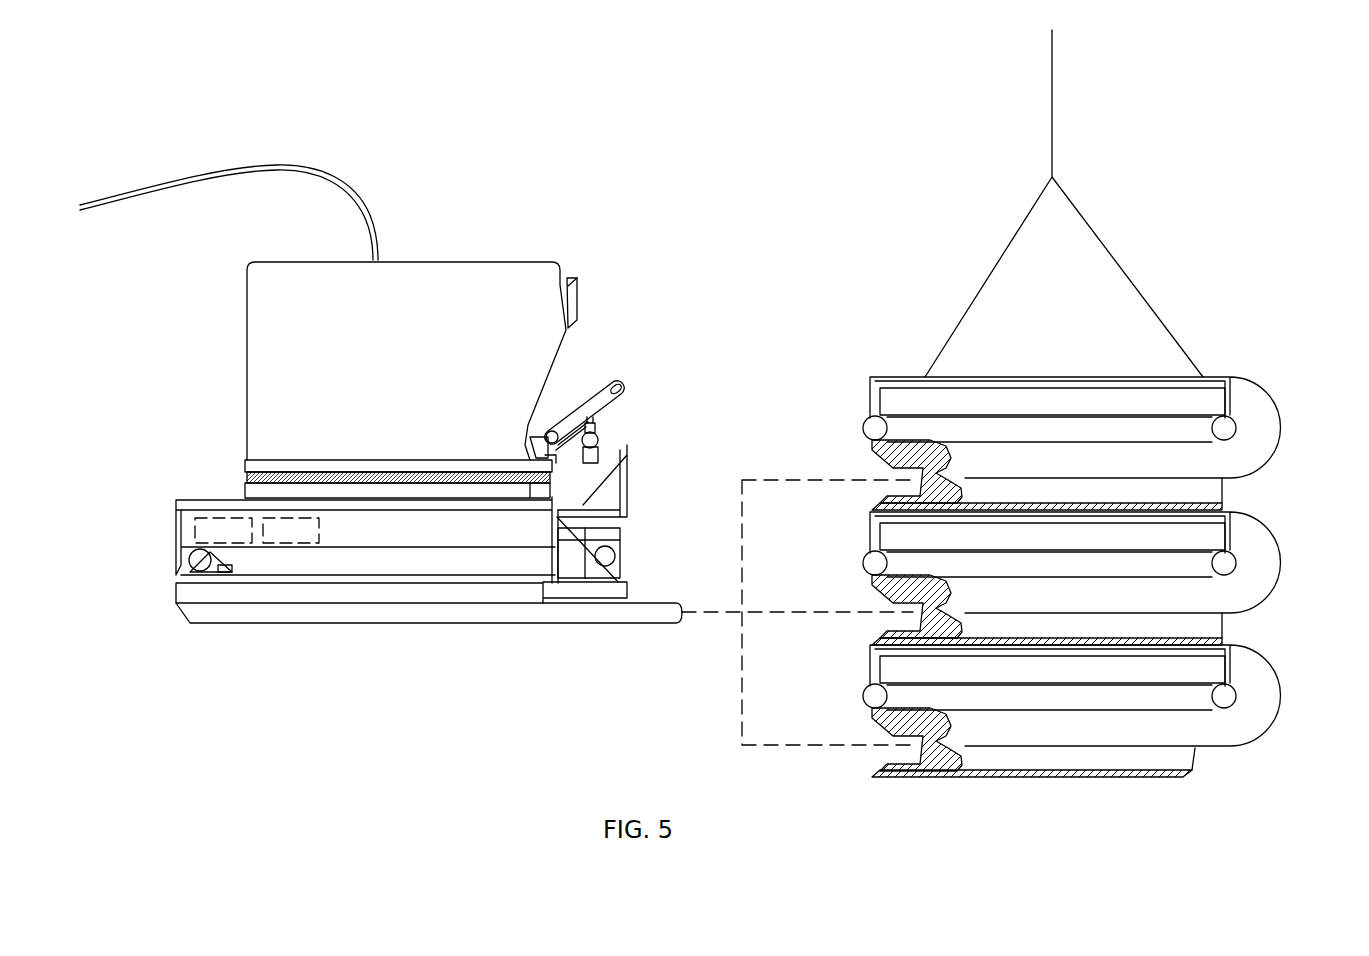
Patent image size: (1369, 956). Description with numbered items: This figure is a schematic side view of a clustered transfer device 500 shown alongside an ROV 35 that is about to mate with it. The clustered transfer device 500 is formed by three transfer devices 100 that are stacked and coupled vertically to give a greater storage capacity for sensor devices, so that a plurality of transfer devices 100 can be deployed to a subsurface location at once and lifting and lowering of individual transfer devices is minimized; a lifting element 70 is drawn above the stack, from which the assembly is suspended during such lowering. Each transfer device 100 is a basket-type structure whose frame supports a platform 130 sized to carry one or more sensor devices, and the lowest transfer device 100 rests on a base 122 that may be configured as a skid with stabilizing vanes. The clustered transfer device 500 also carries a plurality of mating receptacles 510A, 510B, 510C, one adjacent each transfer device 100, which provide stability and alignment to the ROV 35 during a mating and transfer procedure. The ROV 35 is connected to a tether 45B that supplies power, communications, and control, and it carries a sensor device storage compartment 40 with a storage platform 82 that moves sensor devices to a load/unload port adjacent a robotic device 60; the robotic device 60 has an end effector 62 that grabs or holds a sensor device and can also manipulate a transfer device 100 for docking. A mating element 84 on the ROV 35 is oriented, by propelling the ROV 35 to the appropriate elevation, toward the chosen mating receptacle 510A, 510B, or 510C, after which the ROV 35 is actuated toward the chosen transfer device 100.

The tether 45B is at (137, 186).
The ROV 35 is at (511, 258).
The robotic device 60 is at (606, 383).
The end effector 62 is at (600, 447).
The sensor device storage compartment 40 is at (156, 478).
The storage platform 82 is at (618, 530).
The mating receptacle 84 is at (693, 628).
The stand 70 is at (1052, 125).
The clustered transfer device 500 is at (1058, 526).
The transfer device 100 is at (1245, 375).
The platform 130 is at (1023, 432).
The mating receptacle 510A is at (913, 487).
The mating receptacle 510B is at (913, 620).
The mating receptacle 510C is at (913, 753).
The base 122 is at (1140, 778).